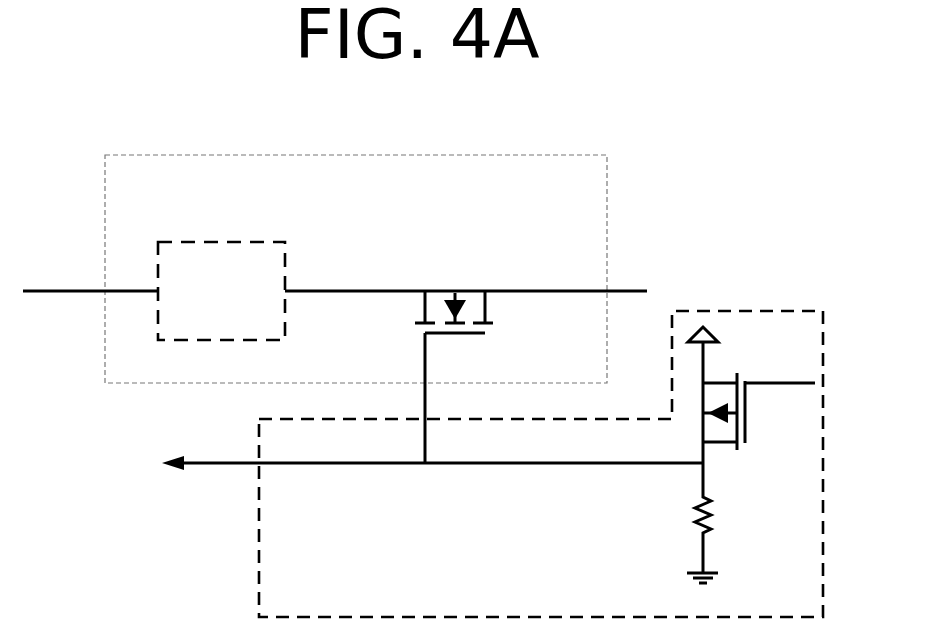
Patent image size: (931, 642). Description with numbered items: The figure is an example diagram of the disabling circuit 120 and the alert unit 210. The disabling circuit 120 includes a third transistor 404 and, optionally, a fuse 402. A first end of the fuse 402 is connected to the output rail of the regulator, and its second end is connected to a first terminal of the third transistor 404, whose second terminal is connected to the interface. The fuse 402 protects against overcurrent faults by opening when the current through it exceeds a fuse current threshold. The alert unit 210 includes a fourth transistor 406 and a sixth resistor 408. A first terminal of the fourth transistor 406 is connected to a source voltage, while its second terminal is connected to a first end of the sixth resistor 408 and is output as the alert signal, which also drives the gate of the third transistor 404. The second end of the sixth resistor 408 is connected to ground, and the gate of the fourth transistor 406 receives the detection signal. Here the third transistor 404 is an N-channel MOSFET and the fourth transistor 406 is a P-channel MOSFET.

The disabling circuit 120 is at (607, 188).
The fuse 402 is at (285, 247).
The third transistor 404 is at (455, 291).
The alert unit 210 is at (823, 341).
The fourth transistor 406 is at (746, 410).
The sixth resistor 408 is at (710, 512).